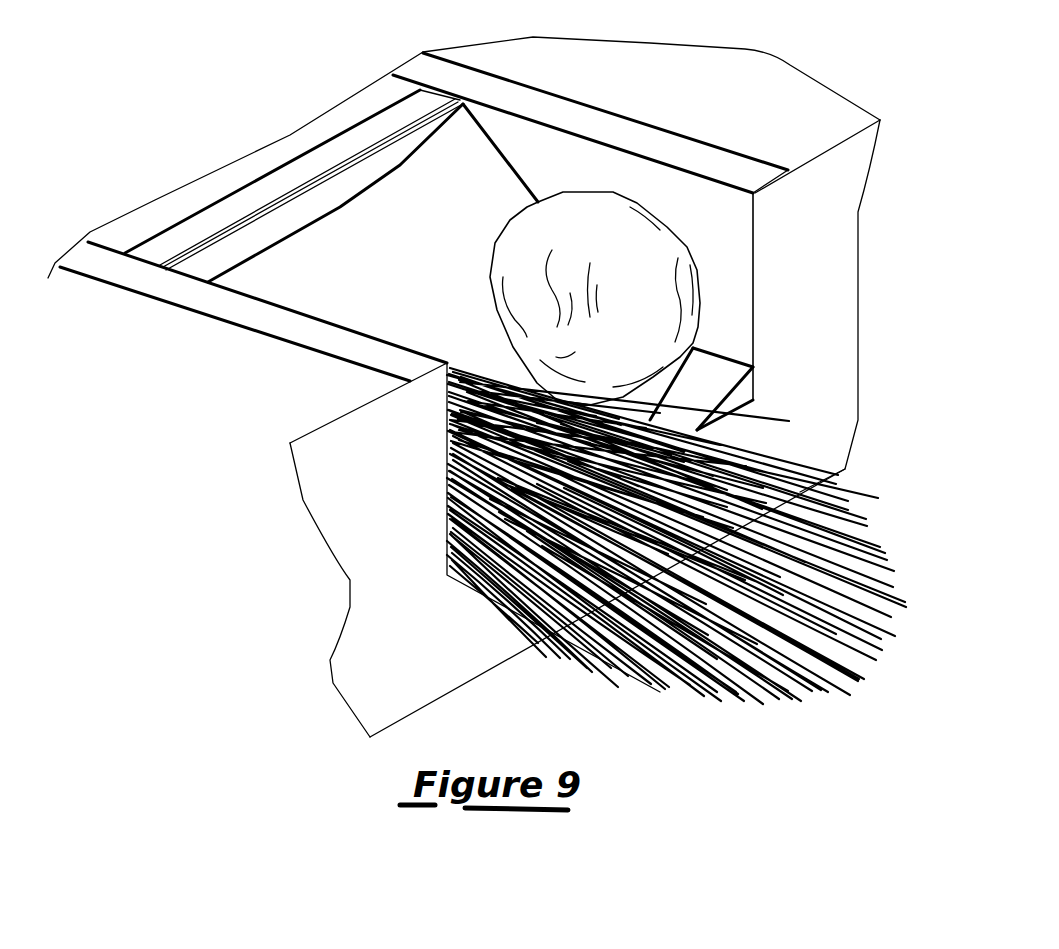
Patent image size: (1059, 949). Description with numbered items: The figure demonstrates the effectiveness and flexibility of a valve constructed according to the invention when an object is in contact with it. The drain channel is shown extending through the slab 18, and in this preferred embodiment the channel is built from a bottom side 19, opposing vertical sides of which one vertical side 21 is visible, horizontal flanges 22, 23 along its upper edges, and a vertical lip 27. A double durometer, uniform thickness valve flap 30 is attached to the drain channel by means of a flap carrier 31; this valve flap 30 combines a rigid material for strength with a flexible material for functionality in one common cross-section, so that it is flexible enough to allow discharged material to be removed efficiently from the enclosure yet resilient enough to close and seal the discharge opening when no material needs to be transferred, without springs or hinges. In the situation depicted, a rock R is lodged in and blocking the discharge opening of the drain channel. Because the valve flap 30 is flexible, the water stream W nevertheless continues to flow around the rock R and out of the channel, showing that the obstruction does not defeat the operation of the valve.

The slab 18 is at (840, 268).
The bottom side 19 is at (707, 363).
The vertical side 21 is at (506, 153).
The horizontal flange 22 is at (243, 310).
The horizontal flange 23 is at (630, 130).
The vertical lip 27 is at (735, 390).
The valve flap 30 is at (335, 193).
The flap carrier 31 is at (273, 227).
The rock R is at (688, 275).
The water stream W is at (598, 550).